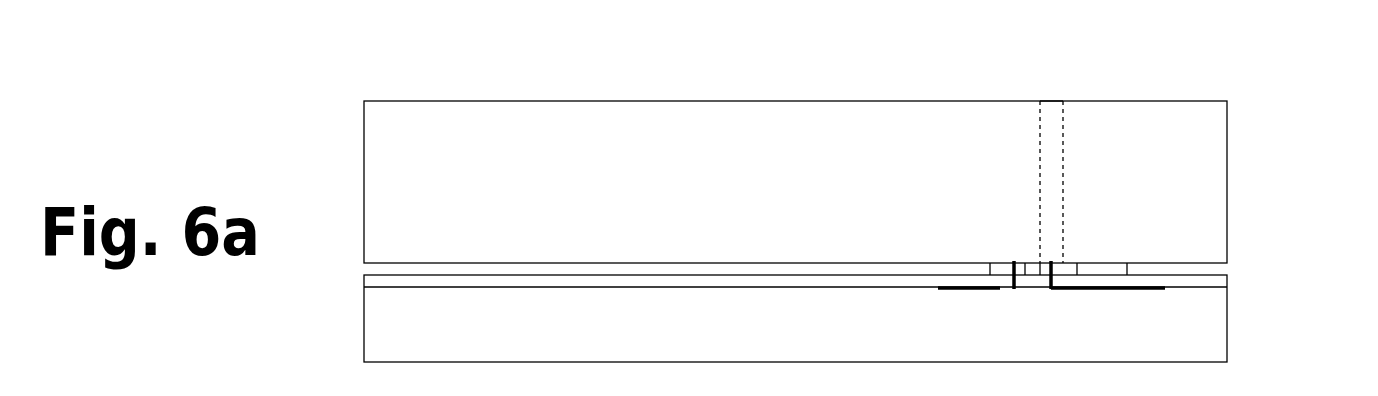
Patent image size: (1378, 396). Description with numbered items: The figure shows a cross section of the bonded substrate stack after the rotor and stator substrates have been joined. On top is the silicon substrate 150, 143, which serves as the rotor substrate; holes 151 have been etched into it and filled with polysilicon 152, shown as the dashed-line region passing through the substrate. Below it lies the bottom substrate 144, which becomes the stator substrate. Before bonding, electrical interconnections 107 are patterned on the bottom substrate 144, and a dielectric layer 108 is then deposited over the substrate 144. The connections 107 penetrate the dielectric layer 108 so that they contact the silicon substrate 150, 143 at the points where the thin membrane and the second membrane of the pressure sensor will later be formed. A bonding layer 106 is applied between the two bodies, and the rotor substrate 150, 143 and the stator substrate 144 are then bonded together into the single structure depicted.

The bonding layer 106 is at (1217, 269).
The electrical interconnections 107 is at (997, 288).
The dielectric layer 108 is at (1220, 280).
The silicon substrate 143 is at (698, 197).
The bottom substrate 144 is at (795, 318).
The silicon substrate 150 is at (795, 182).
The holes 151 is at (1049, 93).
The polysilicon 152 is at (1052, 161).